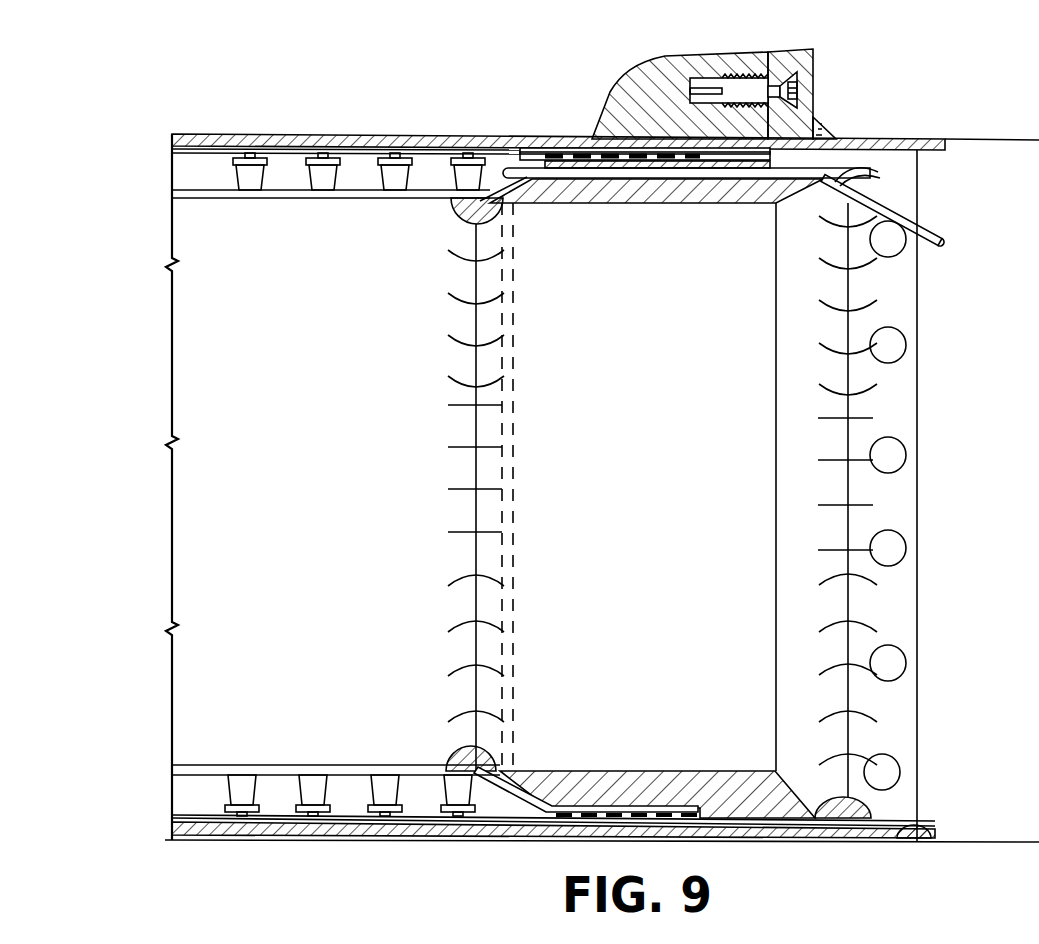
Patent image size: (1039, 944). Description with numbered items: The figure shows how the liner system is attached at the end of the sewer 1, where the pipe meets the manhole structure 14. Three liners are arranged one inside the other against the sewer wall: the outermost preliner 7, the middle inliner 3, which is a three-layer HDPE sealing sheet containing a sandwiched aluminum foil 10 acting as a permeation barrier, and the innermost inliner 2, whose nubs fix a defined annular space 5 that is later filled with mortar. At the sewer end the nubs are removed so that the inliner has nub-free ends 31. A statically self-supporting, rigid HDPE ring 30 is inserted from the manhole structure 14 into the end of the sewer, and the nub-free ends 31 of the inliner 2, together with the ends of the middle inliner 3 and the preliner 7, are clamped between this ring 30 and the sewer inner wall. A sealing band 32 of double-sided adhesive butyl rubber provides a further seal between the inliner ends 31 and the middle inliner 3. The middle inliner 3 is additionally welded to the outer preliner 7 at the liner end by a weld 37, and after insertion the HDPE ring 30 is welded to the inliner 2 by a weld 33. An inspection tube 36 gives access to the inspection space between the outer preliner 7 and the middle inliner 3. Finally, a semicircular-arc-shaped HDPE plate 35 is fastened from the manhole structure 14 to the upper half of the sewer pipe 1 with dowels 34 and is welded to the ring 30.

The sewer 1 is at (654, 78).
The inner inliner 2 is at (330, 195).
The middle inliner 3 is at (345, 822).
The annular space 5 is at (367, 175).
The preliner 7 is at (913, 300).
The sandwiched aluminum foil 10 is at (176, 810).
The manhole structure 14 is at (984, 673).
The HDPE ring 30 is at (617, 787).
The nub-free ends 31 is at (538, 770).
The sealing band 32 is at (683, 808).
The weld 33 is at (447, 762).
The dowels 34 is at (745, 82).
The HDPE plate 35 is at (822, 135).
The inspection tube 36 is at (900, 212).
The weld 37 is at (852, 822).